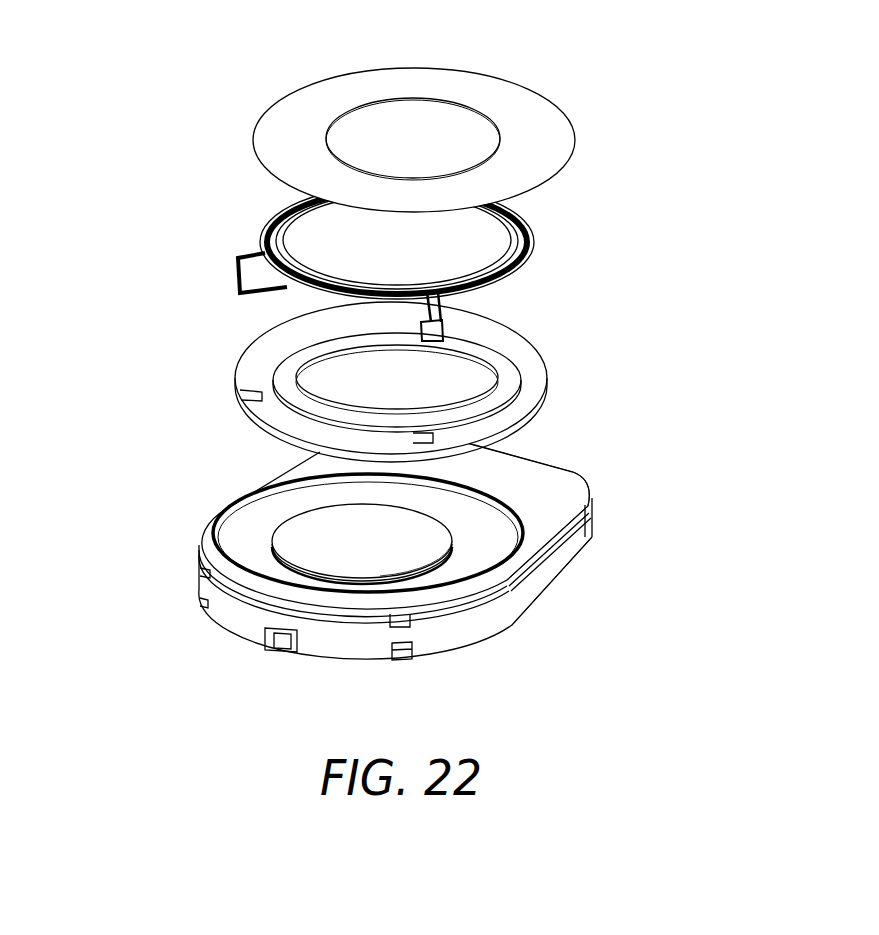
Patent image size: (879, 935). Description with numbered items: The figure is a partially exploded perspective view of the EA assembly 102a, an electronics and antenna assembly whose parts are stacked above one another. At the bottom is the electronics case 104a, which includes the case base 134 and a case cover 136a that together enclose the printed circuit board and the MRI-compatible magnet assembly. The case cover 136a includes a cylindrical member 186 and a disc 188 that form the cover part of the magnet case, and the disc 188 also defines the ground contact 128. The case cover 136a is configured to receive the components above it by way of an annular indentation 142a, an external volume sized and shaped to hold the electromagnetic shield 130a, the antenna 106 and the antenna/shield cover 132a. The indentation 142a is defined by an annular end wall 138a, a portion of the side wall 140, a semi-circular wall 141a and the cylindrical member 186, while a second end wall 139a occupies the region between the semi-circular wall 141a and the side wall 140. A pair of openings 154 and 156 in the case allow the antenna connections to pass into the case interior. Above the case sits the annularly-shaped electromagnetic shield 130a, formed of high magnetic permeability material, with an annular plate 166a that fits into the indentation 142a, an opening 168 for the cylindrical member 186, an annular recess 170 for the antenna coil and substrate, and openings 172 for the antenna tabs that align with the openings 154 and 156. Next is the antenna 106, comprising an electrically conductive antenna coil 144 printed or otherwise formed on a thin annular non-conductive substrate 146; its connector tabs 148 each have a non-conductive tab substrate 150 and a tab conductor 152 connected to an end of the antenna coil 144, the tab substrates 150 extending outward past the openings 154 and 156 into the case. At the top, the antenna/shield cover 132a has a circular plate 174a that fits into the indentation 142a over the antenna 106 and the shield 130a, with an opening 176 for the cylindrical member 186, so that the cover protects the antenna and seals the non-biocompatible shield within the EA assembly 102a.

The EA assembly 102a is at (416, 232).
The electronics case 104a is at (391, 565).
The antenna 106 is at (395, 250).
The ground contact 128 is at (384, 556).
The electromagnetic shield 130a is at (416, 381).
The antenna/shield cover 132a is at (389, 118).
The case base 134 is at (560, 547).
The case cover 136a is at (543, 455).
The annular end wall 138a is at (240, 533).
The second end wall 139a is at (550, 507).
The side wall 140 is at (590, 478).
The semi-circular wall 141a is at (447, 480).
The annular indentation 142a is at (230, 562).
The antenna coil 144 is at (272, 217).
The substrate 146 is at (267, 233).
The connector tab 148 is at (233, 267).
The tab substrate 150 is at (446, 322).
The tab conductor 152 is at (445, 310).
The opening 154 is at (395, 622).
The opening 156 is at (410, 650).
The annular plate 166a is at (517, 330).
The opening 168 is at (411, 386).
The annular recess 170 is at (505, 383).
The openings 172 is at (240, 390).
The circular plate 174a is at (268, 113).
The opening 176 is at (417, 97).
The cylindrical member 186 is at (332, 588).
The disc 188 is at (413, 560).